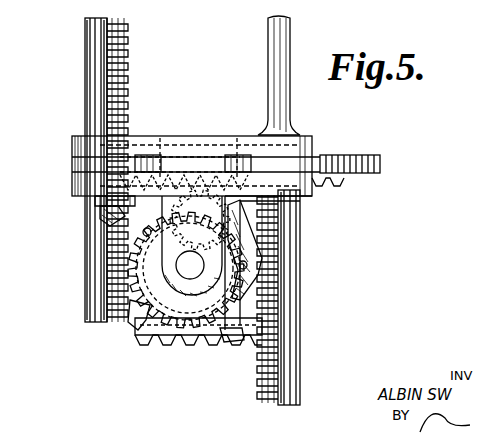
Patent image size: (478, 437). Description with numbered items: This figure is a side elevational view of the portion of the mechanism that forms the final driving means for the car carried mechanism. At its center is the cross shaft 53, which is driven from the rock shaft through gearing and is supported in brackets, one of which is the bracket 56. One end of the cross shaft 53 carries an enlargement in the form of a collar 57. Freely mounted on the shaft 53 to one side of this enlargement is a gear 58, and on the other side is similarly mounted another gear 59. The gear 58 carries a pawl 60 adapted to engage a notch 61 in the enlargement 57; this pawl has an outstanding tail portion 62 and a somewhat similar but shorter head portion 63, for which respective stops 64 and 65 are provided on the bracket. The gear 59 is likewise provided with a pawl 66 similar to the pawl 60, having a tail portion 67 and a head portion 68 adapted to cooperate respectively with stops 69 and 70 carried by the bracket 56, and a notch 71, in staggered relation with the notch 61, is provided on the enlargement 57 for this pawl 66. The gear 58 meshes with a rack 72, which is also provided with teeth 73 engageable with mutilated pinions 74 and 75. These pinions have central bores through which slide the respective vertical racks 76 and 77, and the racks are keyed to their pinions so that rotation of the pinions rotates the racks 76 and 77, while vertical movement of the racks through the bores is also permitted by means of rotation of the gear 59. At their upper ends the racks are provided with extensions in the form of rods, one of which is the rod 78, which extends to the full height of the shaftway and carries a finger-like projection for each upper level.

The cross shaft 53 is at (190, 265).
The bracket 56 is at (188, 280).
The collar 57 is at (205, 342).
The gear 58 is at (232, 340).
The gear 59 is at (156, 318).
The pawl 60 is at (283, 300).
The notch 61 is at (226, 236).
The tail portion 62 is at (262, 256).
The head portion 63 is at (216, 216).
The stop 64 is at (245, 222).
The stop 65 is at (237, 150).
The pawl 66 is at (128, 262).
The tail portion 67 is at (102, 216).
The head portion 68 is at (196, 145).
The stop 69 is at (96, 199).
The stop 70 is at (158, 150).
The notch 71 is at (188, 268).
The rack 72 is at (332, 181).
The teeth 73 is at (370, 158).
The mutilated pinion 74 is at (305, 160).
The mutilated pinion 75 is at (135, 145).
The vertical rack 76 is at (292, 345).
The vertical rack 77 is at (108, 288).
The rod 78 is at (275, 55).